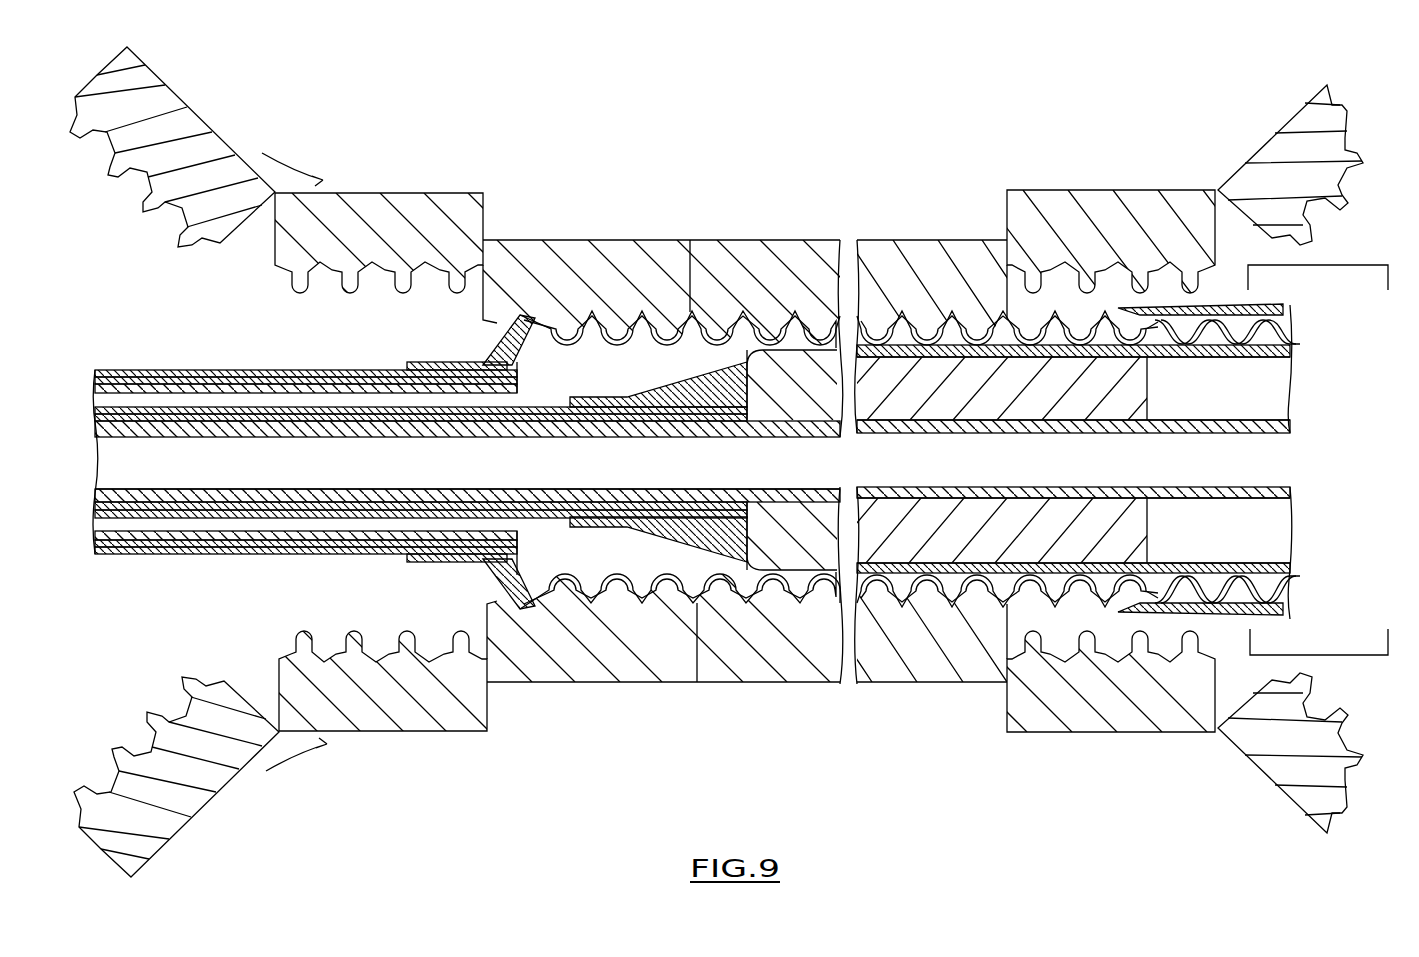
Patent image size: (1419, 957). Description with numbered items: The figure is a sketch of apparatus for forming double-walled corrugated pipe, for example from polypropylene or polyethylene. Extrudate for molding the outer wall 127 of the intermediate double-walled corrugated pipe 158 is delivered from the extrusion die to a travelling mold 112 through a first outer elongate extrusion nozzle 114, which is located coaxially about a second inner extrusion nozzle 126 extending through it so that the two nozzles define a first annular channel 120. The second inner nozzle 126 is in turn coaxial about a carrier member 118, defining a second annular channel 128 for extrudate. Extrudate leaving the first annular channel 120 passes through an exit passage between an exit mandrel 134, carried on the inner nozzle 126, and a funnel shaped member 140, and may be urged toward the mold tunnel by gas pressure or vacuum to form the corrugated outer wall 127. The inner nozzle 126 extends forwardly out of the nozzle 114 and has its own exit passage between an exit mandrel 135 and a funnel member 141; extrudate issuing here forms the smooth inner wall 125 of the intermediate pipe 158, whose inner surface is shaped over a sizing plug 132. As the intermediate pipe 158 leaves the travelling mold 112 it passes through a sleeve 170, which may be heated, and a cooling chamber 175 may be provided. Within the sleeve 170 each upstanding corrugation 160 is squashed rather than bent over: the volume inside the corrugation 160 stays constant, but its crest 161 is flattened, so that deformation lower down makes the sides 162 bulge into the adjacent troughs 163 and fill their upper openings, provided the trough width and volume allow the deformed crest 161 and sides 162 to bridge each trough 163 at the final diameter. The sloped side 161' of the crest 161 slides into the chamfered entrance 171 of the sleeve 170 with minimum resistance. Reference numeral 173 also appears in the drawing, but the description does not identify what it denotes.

The travelling mold 112 is at (673, 214).
The first outer elongate extrusion nozzle 114 is at (240, 368).
The carrier member 118 is at (135, 458).
The first annular channel 120 is at (155, 382).
The smooth inner wall 125 is at (950, 565).
The second inner extrusion nozzle 126 is at (210, 517).
The outer wall 127 is at (788, 312).
The second annular channel 128 is at (298, 503).
The sizing plug 132 is at (922, 375).
The exit mandrel 134 is at (548, 335).
The exit mandrel 135 is at (768, 572).
The funnel shaped member 140 is at (480, 353).
The funnel member 141 is at (658, 527).
The intermediate double-walled corrugated pipe 158 is at (1005, 265).
The corrugation 160 is at (1095, 335).
The crest 161 is at (1073, 691).
The sloped side of crest 161' is at (1073, 221).
The side 162 is at (1035, 580).
The trough 163 is at (940, 560).
The sleeve 170 is at (1205, 612).
The chamfered entrance 171 is at (1167, 350).
The lower undulating spring wire 173 is at (1135, 612).
The cooling chamber 175 is at (1388, 655).